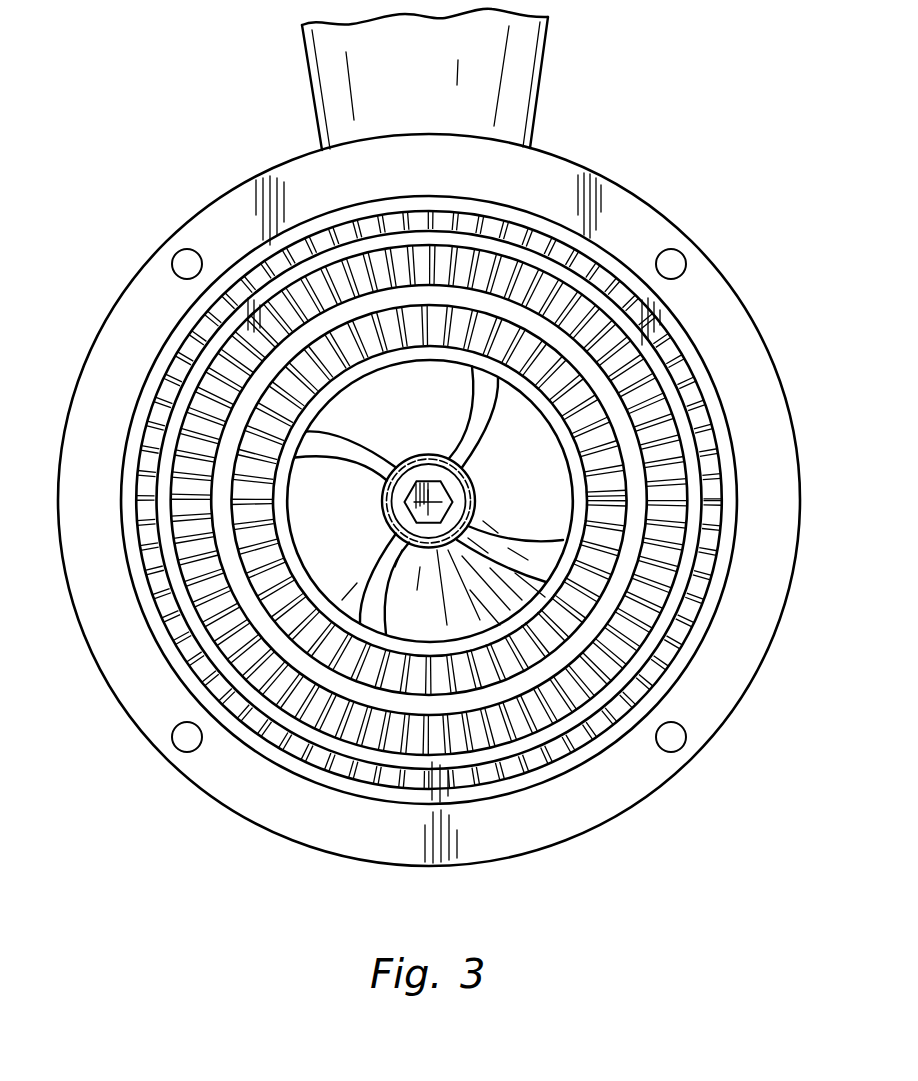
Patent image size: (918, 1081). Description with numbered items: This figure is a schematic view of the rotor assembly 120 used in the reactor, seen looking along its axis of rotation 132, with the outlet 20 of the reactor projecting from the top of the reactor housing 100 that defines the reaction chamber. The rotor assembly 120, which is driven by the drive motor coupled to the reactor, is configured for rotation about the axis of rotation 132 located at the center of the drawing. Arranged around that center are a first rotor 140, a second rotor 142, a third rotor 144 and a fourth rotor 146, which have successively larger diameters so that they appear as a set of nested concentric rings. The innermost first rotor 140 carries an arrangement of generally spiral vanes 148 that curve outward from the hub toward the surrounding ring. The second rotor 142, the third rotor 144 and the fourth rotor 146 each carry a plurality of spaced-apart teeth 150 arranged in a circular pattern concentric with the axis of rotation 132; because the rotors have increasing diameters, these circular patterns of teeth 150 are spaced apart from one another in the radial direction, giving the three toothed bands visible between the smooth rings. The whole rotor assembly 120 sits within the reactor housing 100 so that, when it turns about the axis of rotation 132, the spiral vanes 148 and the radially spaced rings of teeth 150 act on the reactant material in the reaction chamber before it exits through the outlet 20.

The outlet 20 is at (311, 72).
The reactor housing 100 is at (278, 163).
The rotor assembly 120 is at (602, 224).
The axis of rotation 132 is at (434, 482).
The first rotor 140 is at (263, 242).
The second rotor 142 is at (256, 388).
The third rotor 144 is at (184, 400).
The fourth rotor 146 is at (138, 427).
The spiral vanes 148 is at (498, 523).
The teeth 150 is at (600, 428).